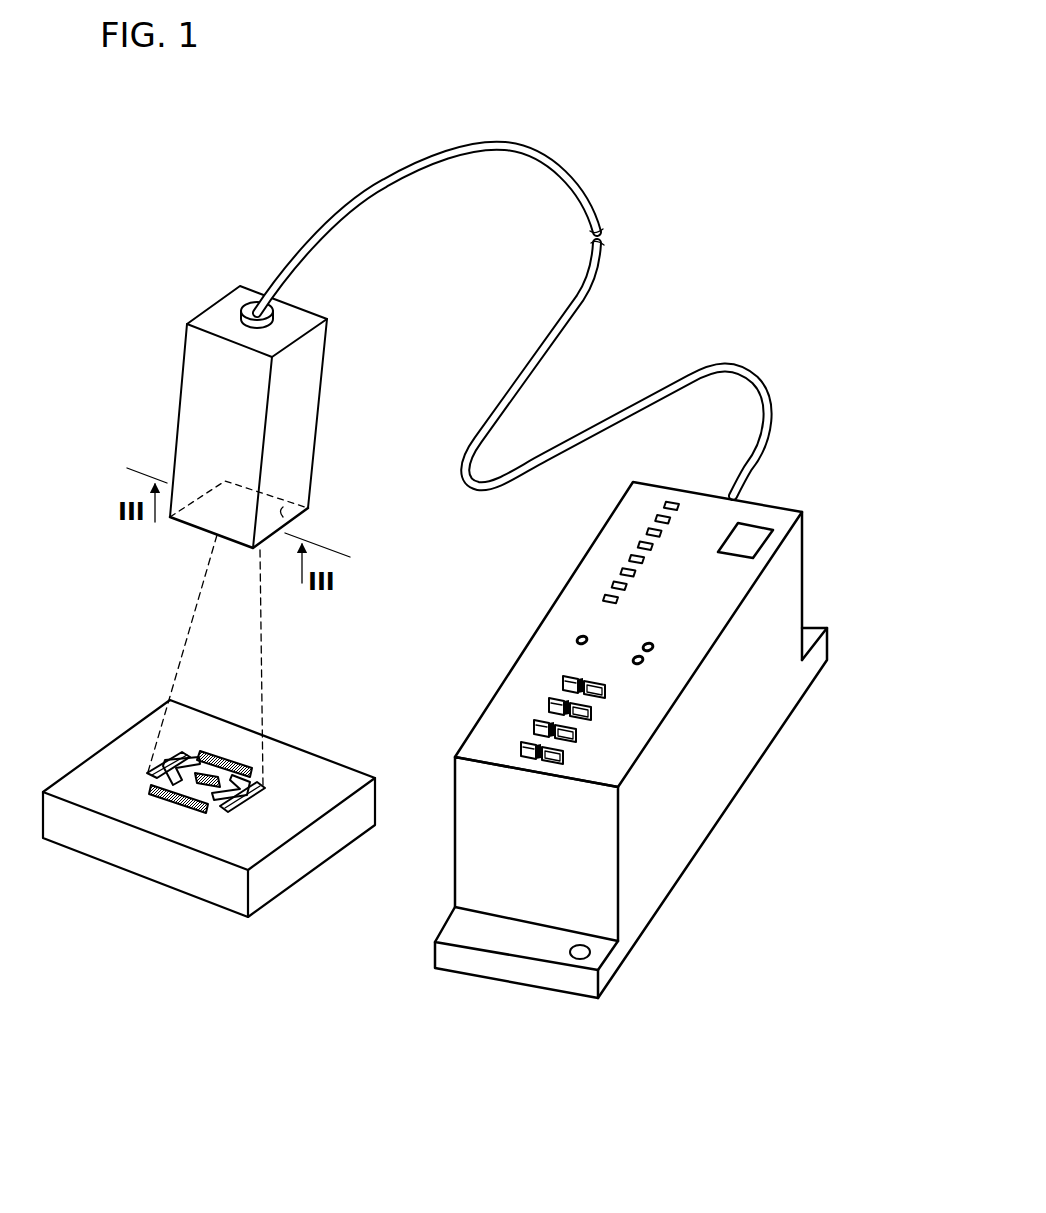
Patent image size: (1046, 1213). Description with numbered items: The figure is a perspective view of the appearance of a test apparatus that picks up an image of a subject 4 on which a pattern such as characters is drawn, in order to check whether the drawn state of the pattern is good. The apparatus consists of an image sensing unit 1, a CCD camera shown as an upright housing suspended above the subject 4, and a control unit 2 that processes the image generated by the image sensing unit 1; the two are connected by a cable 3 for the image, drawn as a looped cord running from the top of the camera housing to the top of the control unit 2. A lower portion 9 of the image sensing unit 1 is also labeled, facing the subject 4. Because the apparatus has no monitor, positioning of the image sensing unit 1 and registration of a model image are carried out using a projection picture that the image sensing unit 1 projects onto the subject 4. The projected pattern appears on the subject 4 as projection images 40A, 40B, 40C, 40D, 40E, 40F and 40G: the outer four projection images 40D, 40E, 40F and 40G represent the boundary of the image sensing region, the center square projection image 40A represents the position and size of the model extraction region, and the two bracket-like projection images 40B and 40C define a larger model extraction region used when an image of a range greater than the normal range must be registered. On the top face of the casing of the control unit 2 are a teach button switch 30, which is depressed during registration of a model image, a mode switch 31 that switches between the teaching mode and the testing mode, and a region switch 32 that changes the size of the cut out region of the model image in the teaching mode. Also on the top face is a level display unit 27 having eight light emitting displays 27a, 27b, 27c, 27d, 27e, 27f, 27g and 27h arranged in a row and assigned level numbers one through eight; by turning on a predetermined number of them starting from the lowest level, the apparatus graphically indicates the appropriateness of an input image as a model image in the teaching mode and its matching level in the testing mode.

The image sensing unit 1 is at (313, 382).
The control unit 2 is at (488, 718).
The cable 3 is at (730, 372).
The subject 4 is at (310, 750).
The lens / light receiving window 9 is at (283, 517).
The level display unit 27 is at (716, 640).
The light emitting display 27a is at (619, 601).
The light emitting display 27b is at (627, 587).
The light emitting display 27c is at (636, 574).
The light emitting display 27d is at (644, 560).
The light emitting display 27e is at (652, 546).
The light emitting display 27f is at (661, 533).
The light emitting display 27g is at (669, 521).
The light emitting display 27h is at (670, 502).
The teach button switch 30 is at (750, 537).
The mode switch 31 is at (583, 678).
The region switch 32 is at (527, 755).
The center square projection image 40A is at (200, 790).
The bracket-like projection image 40B is at (153, 782).
The bracket-like projection image 40C is at (213, 805).
The outer projection image 40D is at (222, 750).
The outer projection image 40E is at (162, 763).
The outer projection image 40F is at (173, 795).
The outer projection image 40G is at (250, 795).